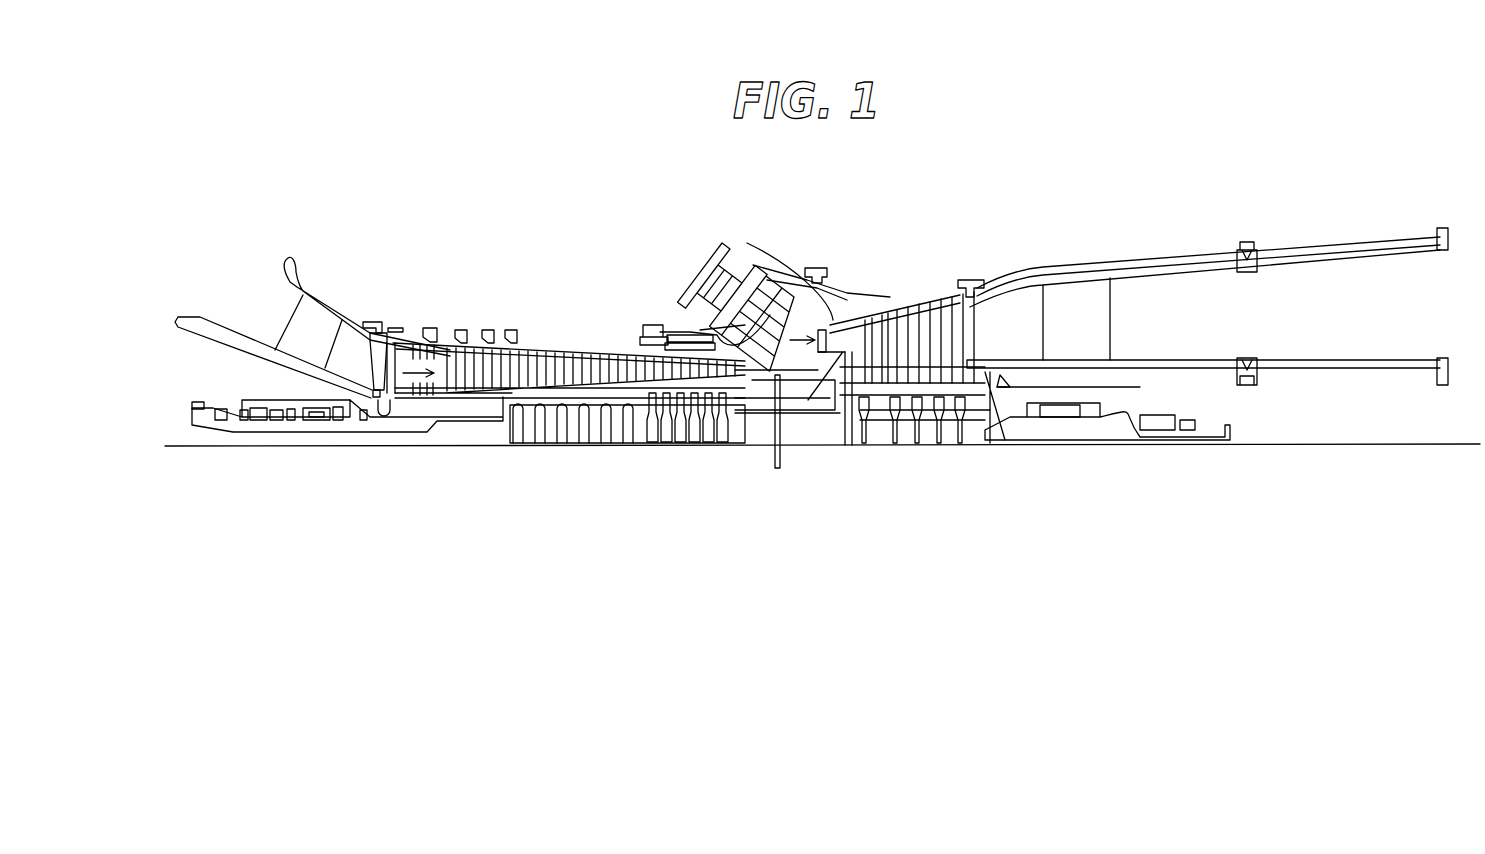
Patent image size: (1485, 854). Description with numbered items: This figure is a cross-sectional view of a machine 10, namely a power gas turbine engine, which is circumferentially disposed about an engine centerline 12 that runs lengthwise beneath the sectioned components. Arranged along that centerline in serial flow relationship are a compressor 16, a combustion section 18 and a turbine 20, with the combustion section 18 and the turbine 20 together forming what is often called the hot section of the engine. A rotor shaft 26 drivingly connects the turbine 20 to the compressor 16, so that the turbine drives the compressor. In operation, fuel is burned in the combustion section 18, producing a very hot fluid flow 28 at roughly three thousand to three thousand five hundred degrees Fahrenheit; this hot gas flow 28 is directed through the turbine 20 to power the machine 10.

The machine 10 is at (946, 201).
The engine centerline 12 is at (1310, 445).
The compressor 16 is at (585, 446).
The combustion section 18 is at (752, 253).
The turbine 20 is at (905, 446).
The rotor shaft 26 is at (450, 440).
The hot fluid flow 28 is at (417, 373).